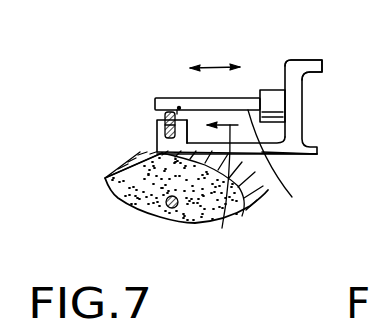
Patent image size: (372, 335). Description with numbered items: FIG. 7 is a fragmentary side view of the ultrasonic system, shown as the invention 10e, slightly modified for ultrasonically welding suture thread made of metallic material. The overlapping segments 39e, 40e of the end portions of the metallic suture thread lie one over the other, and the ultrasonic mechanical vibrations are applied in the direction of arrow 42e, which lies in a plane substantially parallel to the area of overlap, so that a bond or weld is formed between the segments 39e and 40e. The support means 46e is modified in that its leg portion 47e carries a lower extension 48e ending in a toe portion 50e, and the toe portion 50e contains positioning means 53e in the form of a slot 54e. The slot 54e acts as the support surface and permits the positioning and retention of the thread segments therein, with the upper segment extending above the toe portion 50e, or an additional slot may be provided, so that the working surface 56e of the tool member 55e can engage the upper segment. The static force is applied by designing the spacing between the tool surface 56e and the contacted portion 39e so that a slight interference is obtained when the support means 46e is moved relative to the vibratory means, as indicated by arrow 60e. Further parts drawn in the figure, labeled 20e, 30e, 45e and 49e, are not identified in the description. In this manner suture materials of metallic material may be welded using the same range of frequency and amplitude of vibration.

The invention 10e is at (312, 93).
The brake shoe body 20e is at (122, 211).
The pivot pin 30e is at (168, 206).
The overlapping segment 39e is at (162, 116).
The overlapping segment 40e is at (158, 136).
The arrow 42e is at (215, 68).
The mounting block 45e is at (266, 90).
The support means 46e is at (306, 58).
The leg portion 47e is at (283, 152).
The lower extension 48e is at (210, 147).
The hatched wedge region 49e is at (128, 160).
The toe portion 50e is at (157, 126).
The positioning means 53e is at (179, 107).
The slot 54e is at (190, 118).
The tool member 55e is at (164, 99).
The working surface 56e is at (292, 165).
The arrow 60e is at (240, 217).